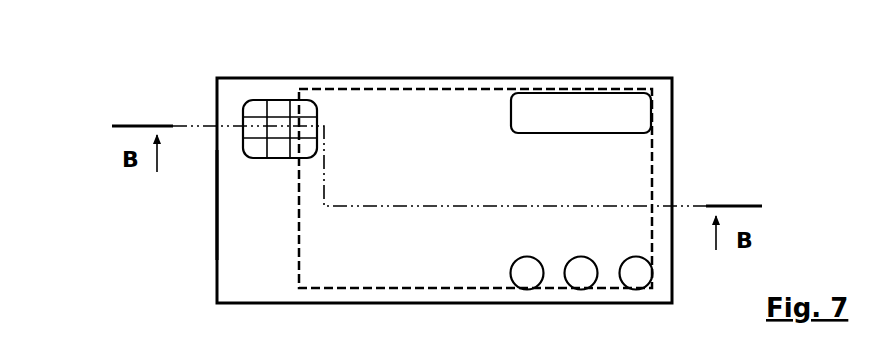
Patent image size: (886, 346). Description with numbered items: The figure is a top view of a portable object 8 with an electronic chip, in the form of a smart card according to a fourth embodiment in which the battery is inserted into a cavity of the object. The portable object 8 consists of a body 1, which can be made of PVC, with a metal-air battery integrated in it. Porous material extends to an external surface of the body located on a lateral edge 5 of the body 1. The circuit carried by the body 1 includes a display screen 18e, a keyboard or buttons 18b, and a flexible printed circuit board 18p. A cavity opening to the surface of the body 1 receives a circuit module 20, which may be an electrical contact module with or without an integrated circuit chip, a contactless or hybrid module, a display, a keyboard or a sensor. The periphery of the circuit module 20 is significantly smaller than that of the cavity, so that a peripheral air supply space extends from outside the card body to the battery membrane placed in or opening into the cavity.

The body 1 is at (663, 72).
The lateral edge 5 is at (212, 200).
The portable object 8 is at (199, 57).
The flexible printed circuit board 18p is at (657, 158).
The display screen 18e is at (655, 104).
The buttons 18b is at (647, 268).
The circuit module 20 is at (247, 118).